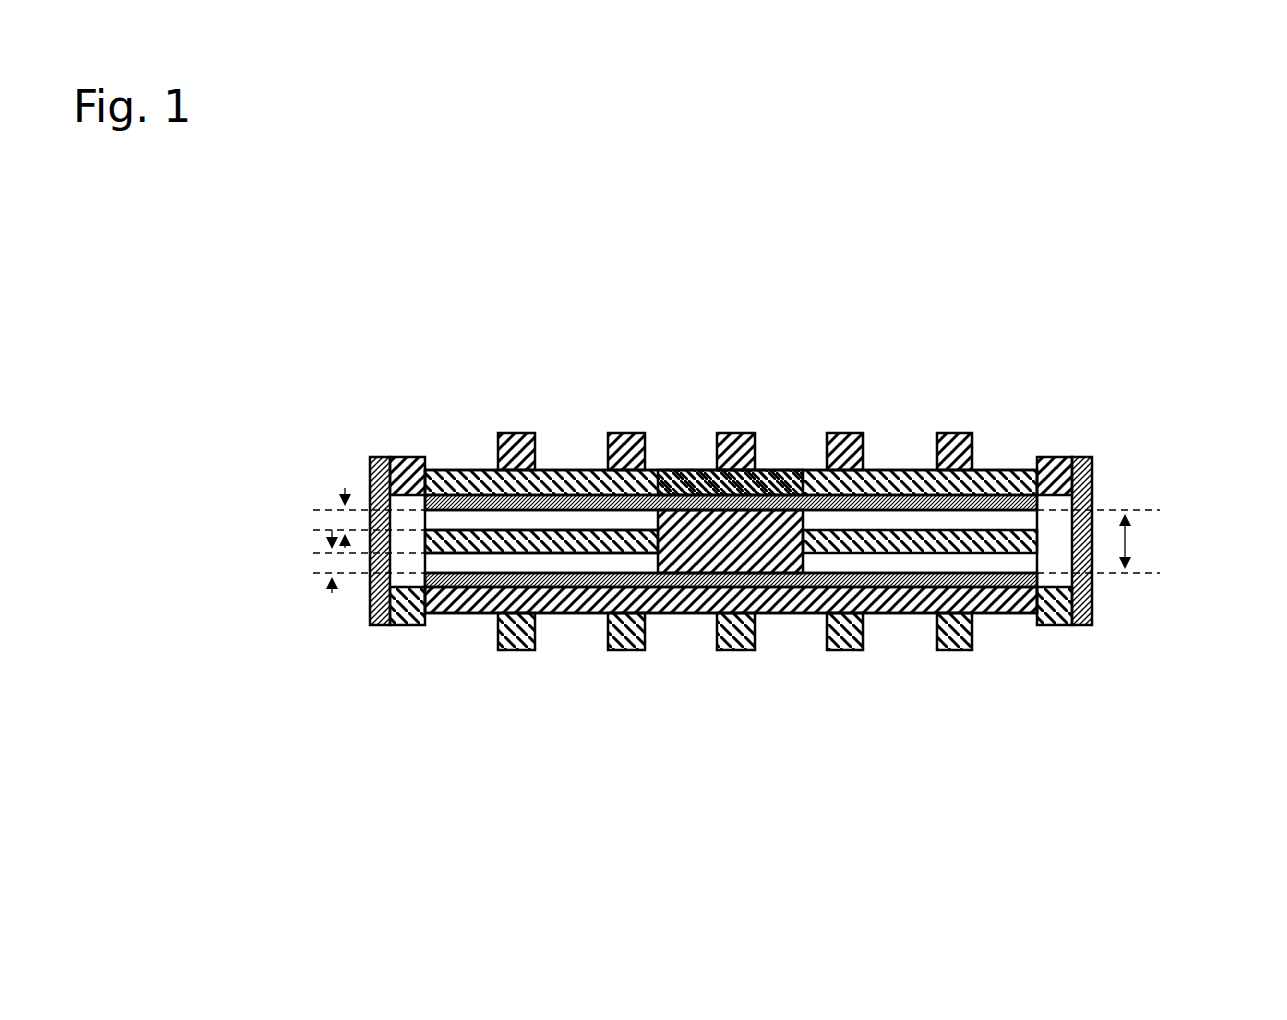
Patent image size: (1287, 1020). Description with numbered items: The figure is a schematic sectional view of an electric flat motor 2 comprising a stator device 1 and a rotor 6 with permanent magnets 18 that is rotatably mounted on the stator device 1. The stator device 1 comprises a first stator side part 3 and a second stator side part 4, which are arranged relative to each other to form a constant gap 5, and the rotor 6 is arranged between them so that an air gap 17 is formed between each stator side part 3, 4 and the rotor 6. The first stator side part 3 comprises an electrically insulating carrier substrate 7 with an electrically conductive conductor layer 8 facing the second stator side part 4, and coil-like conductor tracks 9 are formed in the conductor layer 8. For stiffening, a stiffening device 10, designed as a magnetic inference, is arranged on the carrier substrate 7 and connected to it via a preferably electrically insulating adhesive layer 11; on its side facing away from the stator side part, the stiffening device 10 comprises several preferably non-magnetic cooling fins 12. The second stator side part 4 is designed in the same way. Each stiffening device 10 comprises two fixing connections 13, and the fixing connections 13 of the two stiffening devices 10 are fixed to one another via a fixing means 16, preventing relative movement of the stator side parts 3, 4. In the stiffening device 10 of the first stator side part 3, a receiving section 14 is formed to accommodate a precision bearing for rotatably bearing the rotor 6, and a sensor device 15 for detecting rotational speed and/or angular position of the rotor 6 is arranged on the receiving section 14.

The stator device 1 is at (457, 461).
The electric flat motor 2 is at (714, 264).
The first stator side part 3 is at (406, 501).
The second stator side part 4 is at (406, 578).
The constant gap 5 is at (1143, 541).
The rotor 6 is at (1051, 541).
The carrier substrate 7 is at (847, 433).
The conductor layer 8 is at (490, 470).
The coil-like conductor tracks 9 is at (571, 497).
The stiffening device 10 is at (1000, 470).
The adhesive layer 11 is at (921, 530).
The cooling fins 12 is at (515, 433).
The fixing connections 13 is at (407, 446).
The receiving section 14 is at (727, 433).
The sensor device 15 is at (652, 470).
The fixing means 16 is at (378, 458).
The air gap 17 is at (334, 520).
The permanent magnets 18 is at (940, 470).